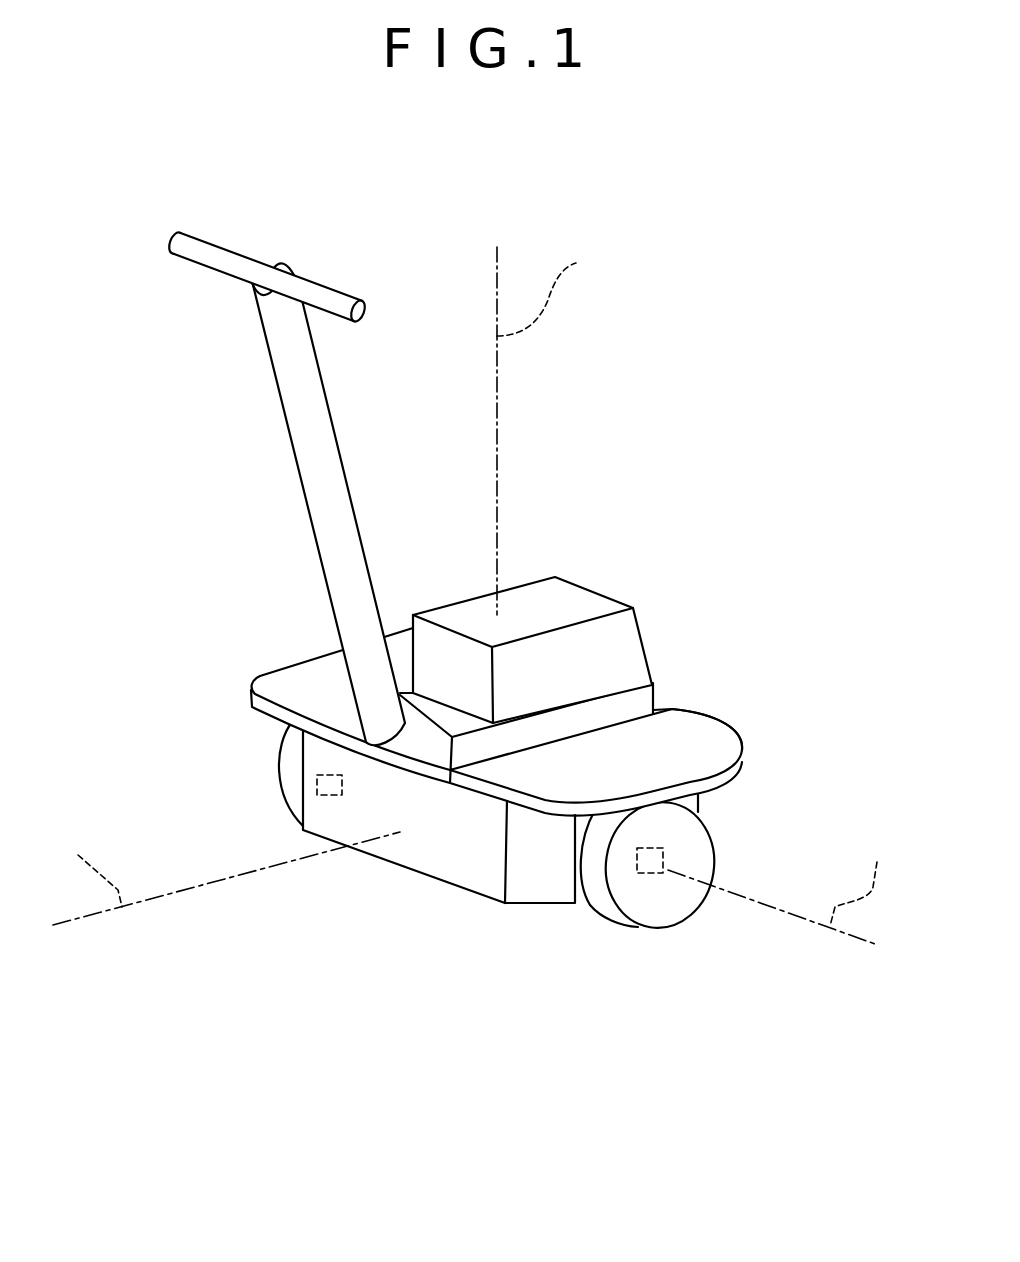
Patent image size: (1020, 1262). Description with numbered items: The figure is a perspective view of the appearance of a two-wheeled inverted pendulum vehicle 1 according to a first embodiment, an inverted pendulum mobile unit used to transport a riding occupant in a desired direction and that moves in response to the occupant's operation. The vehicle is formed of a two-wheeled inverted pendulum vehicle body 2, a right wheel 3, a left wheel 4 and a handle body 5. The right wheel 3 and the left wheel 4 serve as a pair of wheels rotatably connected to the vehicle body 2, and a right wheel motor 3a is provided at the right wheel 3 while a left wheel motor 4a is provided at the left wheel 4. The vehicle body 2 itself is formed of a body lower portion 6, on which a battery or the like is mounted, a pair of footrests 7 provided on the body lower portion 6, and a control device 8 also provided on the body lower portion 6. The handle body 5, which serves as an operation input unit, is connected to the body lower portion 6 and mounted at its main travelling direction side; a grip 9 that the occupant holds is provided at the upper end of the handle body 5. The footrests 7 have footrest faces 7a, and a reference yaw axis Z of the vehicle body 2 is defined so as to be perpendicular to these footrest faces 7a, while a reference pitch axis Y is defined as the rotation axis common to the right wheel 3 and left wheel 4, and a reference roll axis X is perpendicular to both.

The two-wheeled inverted pendulum vehicle 1 is at (469, 650).
The two-wheeled inverted pendulum vehicle body 2 is at (547, 880).
The right wheel 3 is at (292, 768).
The right wheel motor 3a is at (317, 789).
The left wheel 4 is at (648, 915).
The left wheel motor 4a is at (663, 860).
The handle body 5 is at (312, 427).
The body lower portion 6 is at (472, 855).
The footrests 7 is at (300, 687).
The footrest faces 7a is at (720, 740).
The control device 8 is at (627, 637).
The grip 9 is at (205, 258).